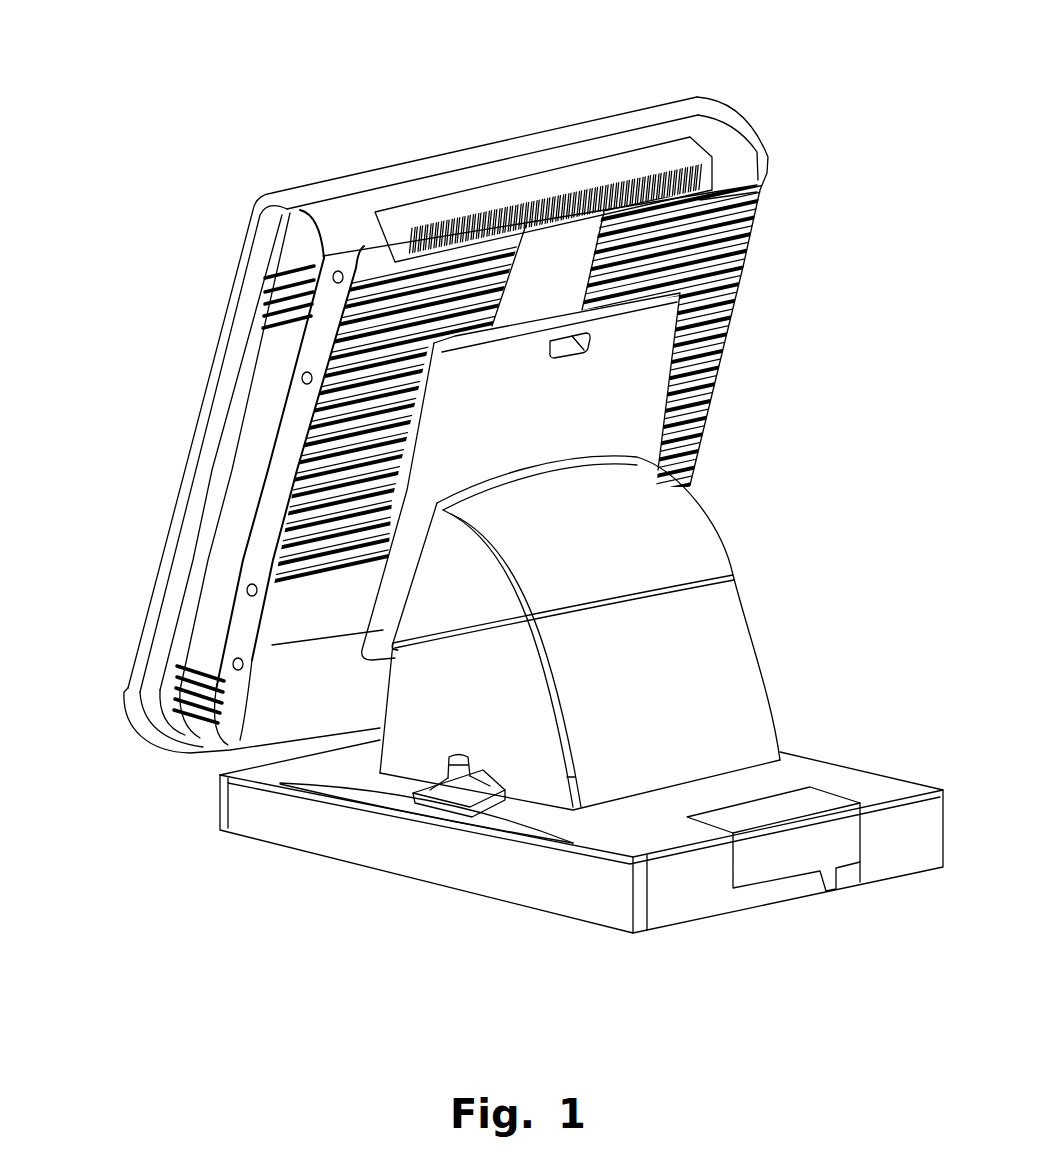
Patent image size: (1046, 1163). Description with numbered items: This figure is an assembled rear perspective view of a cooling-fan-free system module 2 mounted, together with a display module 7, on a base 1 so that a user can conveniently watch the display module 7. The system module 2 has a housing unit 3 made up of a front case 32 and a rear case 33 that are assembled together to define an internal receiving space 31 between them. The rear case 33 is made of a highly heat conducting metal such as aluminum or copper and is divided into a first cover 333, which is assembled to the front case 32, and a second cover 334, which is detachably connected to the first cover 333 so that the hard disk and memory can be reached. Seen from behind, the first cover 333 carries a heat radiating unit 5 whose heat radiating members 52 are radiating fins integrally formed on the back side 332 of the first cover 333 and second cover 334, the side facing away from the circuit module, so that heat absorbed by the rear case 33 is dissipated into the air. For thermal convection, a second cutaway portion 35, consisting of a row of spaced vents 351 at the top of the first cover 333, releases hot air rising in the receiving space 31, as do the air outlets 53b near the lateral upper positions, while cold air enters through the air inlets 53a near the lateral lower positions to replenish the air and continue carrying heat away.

The base 1 is at (778, 600).
The cooling-fan-free system module 2 is at (292, 153).
The housing unit 3 is at (530, 118).
The receiving space 31 is at (348, 215).
The front case 32 is at (672, 110).
The rear case 33 is at (726, 135).
The back side 332 is at (312, 456).
The first cover 333 is at (328, 266).
The second cover 334 is at (758, 196).
The second cutaway portion 35 is at (596, 182).
The vents 351 is at (500, 205).
The heat radiating unit 5 is at (760, 273).
The heat radiating members 52 is at (730, 347).
The air inlets 53a is at (178, 665).
The air outlets 53b is at (278, 295).
The display module 7 is at (152, 567).